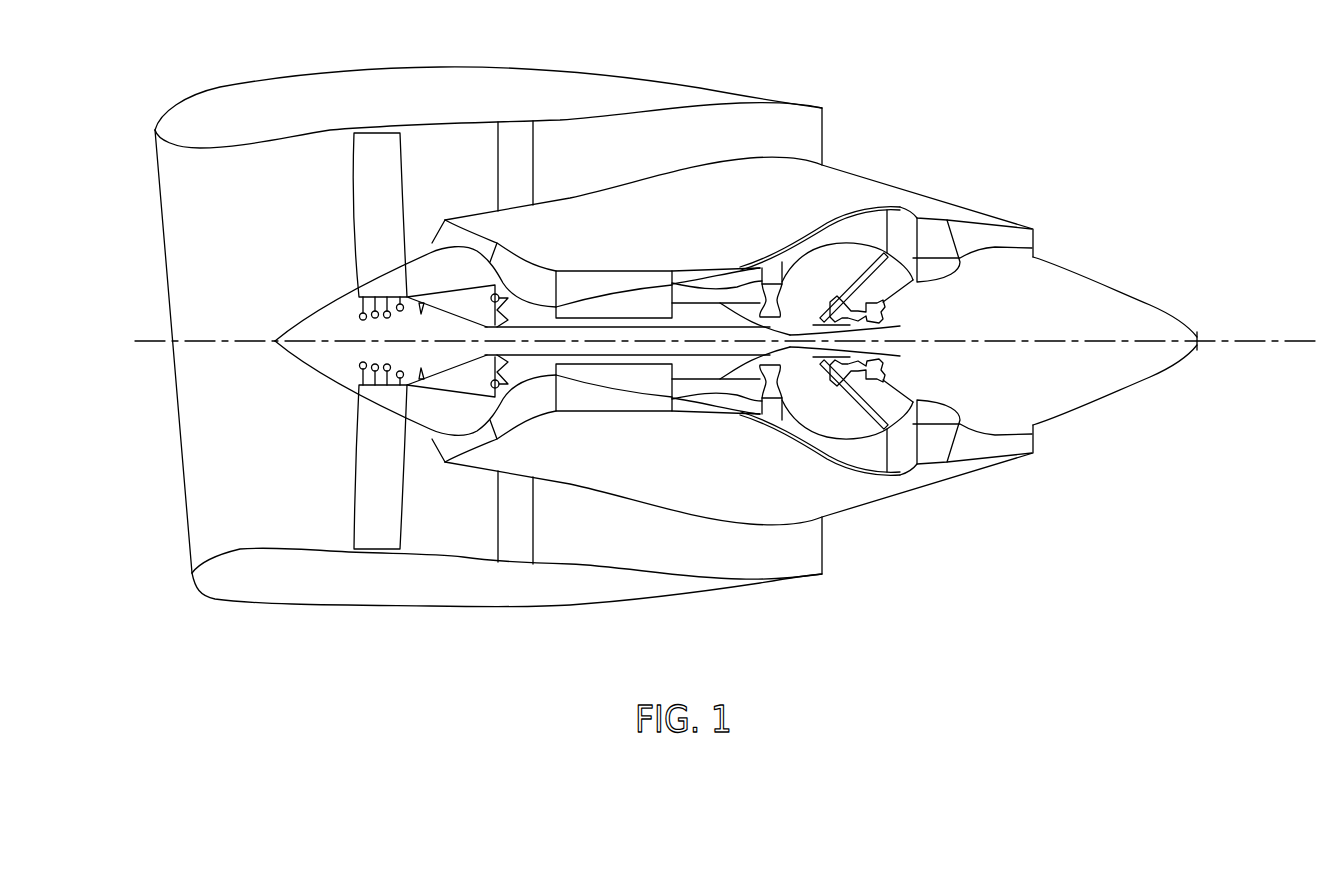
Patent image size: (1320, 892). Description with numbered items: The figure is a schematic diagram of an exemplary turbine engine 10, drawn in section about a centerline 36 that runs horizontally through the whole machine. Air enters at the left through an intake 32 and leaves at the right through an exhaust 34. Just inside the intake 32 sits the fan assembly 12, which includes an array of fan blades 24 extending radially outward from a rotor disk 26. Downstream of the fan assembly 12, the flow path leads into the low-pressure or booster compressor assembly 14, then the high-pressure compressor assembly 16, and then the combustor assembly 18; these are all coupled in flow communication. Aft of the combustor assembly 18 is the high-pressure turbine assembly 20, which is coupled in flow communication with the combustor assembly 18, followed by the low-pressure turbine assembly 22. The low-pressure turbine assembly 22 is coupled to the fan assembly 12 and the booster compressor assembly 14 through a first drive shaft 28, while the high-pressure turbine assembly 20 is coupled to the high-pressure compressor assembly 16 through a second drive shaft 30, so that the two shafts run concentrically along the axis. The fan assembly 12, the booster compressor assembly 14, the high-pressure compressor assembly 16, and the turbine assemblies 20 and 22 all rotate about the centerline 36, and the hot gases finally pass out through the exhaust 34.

The turbine engine 10 is at (966, 72).
The fan assembly 12 is at (330, 190).
The booster compressor assembly 14 is at (449, 200).
The high-pressure compressor assembly 16 is at (608, 252).
The combustor assembly 18 is at (720, 252).
The high-pressure turbine assembly 20 is at (781, 240).
The low-pressure turbine assembly 22 is at (868, 190).
The fan blades 24 is at (394, 228).
The rotor disk 26 is at (342, 332).
The first drive shaft 28 is at (538, 328).
The second drive shaft 30 is at (900, 326).
The intake 32 is at (112, 174).
The exhaust 34 is at (1066, 238).
The centerline 36 is at (1247, 340).